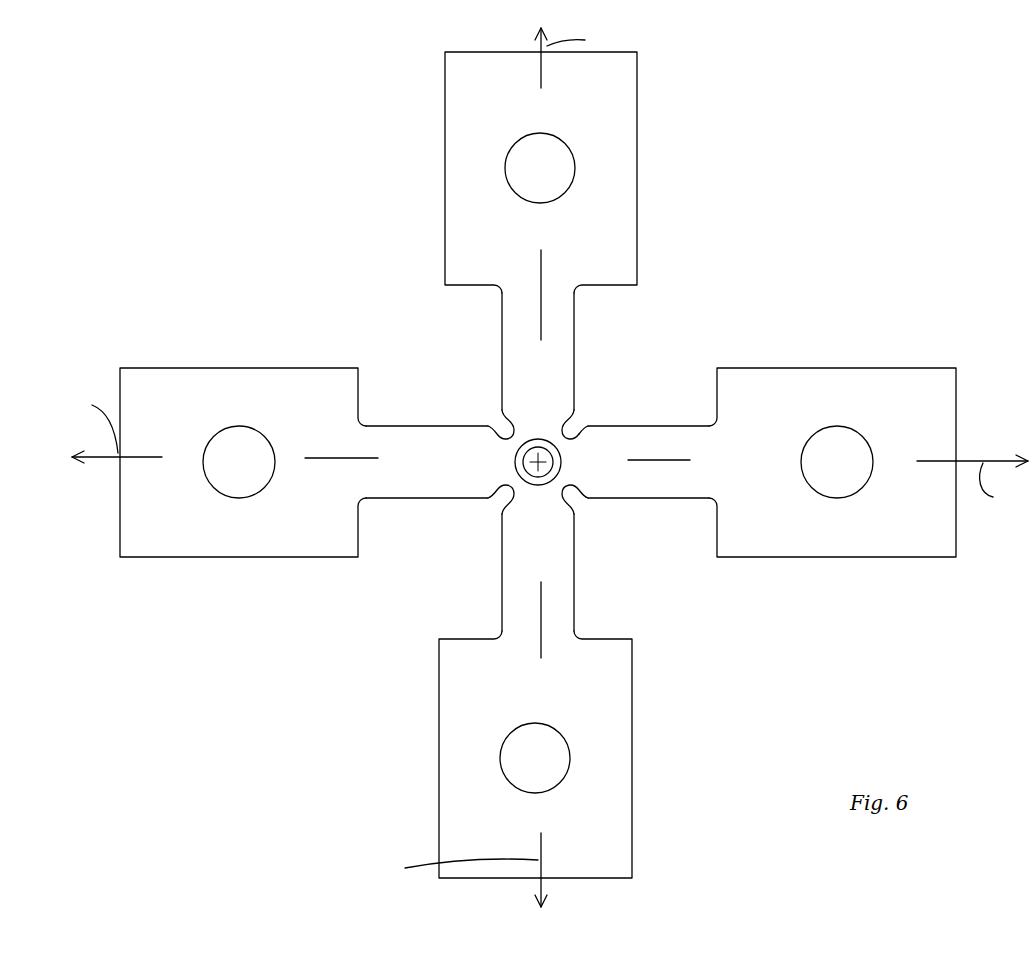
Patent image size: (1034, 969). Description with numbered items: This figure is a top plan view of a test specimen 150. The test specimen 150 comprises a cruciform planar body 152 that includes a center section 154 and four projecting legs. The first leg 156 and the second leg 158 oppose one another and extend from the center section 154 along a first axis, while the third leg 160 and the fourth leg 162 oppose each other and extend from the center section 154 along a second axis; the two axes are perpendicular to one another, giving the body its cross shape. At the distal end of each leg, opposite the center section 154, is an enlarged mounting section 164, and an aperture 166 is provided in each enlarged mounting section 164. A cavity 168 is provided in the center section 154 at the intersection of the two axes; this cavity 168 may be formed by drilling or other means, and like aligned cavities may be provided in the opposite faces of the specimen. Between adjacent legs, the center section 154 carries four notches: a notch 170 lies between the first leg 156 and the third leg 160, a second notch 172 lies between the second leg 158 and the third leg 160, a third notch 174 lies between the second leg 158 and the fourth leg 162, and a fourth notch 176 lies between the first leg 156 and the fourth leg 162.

The test specimen 150 is at (803, 221).
The cruciform planar body 152 is at (575, 607).
The center section 154 is at (507, 465).
The first leg 156 is at (394, 432).
The second leg 158 is at (640, 492).
The third leg 160 is at (566, 352).
The fourth leg 162 is at (513, 568).
The enlarged mounting section 164 is at (628, 172).
The aperture 166 is at (515, 162).
The cavity 168 is at (563, 433).
The notch 170 is at (497, 437).
The second notch 172 is at (566, 440).
The third notch 174 is at (567, 490).
The fourth notch 176 is at (512, 498).